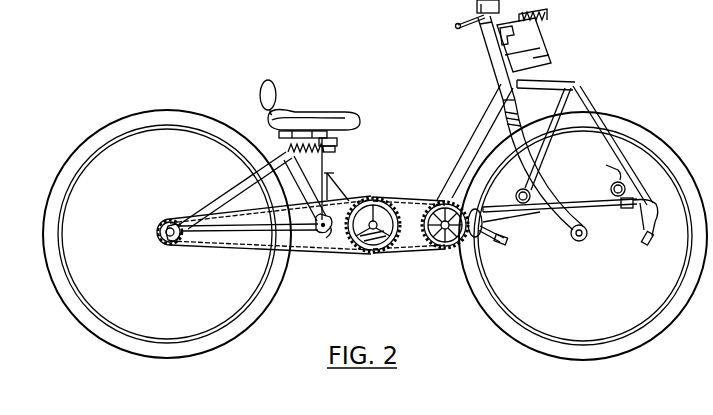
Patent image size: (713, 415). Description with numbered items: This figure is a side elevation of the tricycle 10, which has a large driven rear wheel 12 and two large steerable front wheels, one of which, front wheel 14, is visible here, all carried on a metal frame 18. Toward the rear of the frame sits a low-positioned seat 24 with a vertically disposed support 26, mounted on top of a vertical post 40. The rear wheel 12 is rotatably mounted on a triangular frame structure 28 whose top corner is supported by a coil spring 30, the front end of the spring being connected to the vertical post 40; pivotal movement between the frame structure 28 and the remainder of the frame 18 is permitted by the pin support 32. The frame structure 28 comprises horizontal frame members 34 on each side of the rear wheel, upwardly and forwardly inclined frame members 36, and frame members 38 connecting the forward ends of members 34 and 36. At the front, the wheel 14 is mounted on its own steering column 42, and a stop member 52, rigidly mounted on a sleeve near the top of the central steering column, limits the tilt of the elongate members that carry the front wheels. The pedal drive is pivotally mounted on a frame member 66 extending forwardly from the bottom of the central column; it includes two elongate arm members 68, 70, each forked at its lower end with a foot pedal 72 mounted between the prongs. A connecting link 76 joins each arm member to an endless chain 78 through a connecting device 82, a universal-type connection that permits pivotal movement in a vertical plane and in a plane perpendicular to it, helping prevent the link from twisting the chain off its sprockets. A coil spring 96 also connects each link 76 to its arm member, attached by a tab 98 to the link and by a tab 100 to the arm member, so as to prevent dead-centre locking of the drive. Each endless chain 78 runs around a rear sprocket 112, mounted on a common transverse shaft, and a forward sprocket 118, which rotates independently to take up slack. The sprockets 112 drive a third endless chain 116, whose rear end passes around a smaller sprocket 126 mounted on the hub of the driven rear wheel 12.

The tricycle 10 is at (319, 110).
The rear wheel 12 is at (268, 298).
The front wheel 14 is at (655, 145).
The frame 18 is at (467, 148).
The seat 24 is at (358, 118).
The support 26 is at (274, 84).
The triangular frame structure 28 is at (257, 233).
The coil spring 30 is at (334, 158).
The pin support 32 is at (322, 231).
The horizontal frame member 34 is at (233, 236).
The inclined frame member 36 is at (274, 160).
The connecting frame member 38 is at (300, 188).
The vertical post 40 is at (326, 150).
The steering column 42 is at (484, 44).
The stop member 52 is at (538, 42).
The frame member 66 is at (566, 87).
The arm member 68 is at (640, 190).
The arm member 70 is at (562, 150).
The foot pedal 72 is at (508, 243).
The connecting link 76 is at (627, 209).
The endless chain 78 is at (408, 257).
The connecting device 82 is at (657, 205).
The coil spring 96 is at (520, 189).
The tab 98 is at (588, 206).
The tab 100 is at (620, 166).
The sprocket 112 is at (377, 252).
The endless chain 116 is at (302, 258).
The sprocket 118 is at (446, 255).
The sprocket 126 is at (162, 238).